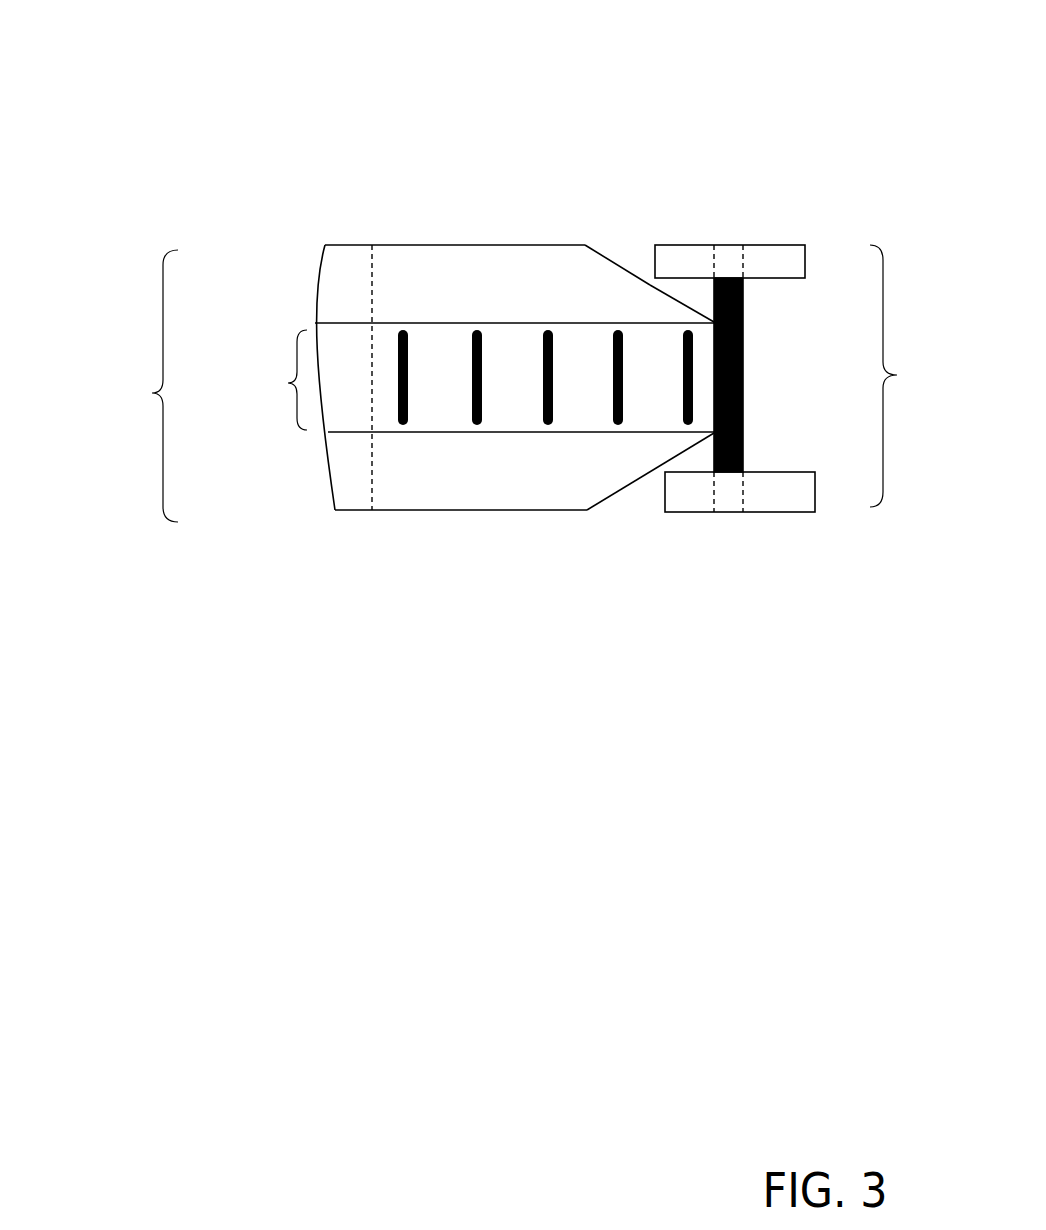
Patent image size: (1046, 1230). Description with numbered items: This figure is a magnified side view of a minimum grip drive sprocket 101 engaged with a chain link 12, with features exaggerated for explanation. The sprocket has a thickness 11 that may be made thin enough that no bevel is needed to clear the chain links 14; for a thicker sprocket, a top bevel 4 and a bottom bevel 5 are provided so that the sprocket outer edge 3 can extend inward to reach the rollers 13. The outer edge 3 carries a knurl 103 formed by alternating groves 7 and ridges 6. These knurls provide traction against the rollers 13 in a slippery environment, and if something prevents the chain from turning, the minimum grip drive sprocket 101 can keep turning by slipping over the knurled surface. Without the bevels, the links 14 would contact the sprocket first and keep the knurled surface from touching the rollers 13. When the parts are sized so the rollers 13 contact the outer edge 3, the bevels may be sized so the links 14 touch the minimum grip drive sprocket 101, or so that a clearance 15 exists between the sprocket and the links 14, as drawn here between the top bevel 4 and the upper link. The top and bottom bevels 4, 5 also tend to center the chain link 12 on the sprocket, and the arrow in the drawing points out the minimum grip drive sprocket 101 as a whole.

The minimum grip drive sprocket outer edge 3 is at (396, 381).
The top bevel 4 is at (608, 257).
The bottom bevel 5 is at (604, 503).
The ridge 6 is at (700, 437).
The grove 7 is at (700, 387).
The thickness 11 is at (110, 386).
The chain link 12 is at (914, 376).
The roller 13 is at (753, 377).
The link 14 is at (778, 258).
The clearance 15 is at (652, 275).
The minimum grip drive sprocket 101 is at (622, 702).
The knurl 103 is at (447, 363).